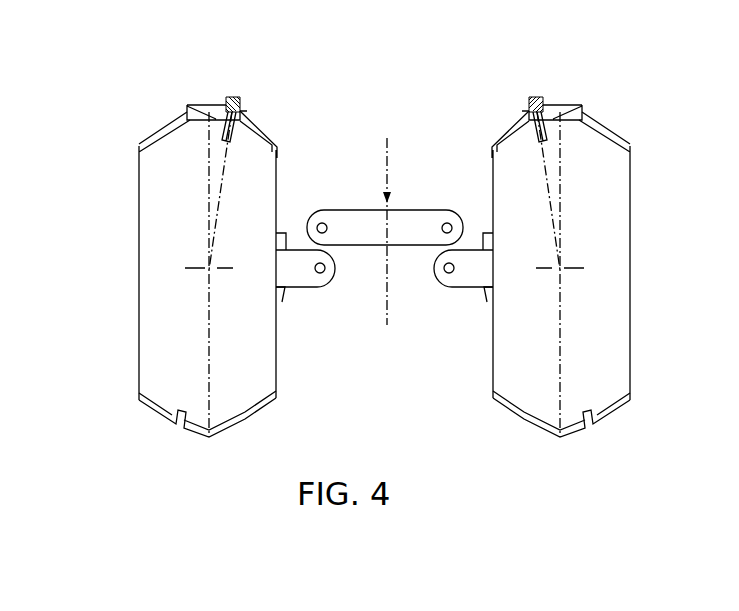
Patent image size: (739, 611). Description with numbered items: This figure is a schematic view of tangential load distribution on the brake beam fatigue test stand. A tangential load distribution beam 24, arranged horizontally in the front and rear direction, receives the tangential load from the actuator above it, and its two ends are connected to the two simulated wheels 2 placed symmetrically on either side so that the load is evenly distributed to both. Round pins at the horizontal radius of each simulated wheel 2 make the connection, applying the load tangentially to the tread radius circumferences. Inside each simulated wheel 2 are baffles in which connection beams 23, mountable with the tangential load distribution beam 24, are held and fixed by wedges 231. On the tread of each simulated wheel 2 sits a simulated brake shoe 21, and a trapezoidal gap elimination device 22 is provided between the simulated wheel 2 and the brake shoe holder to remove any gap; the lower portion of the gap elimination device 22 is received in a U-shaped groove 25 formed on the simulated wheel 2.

The simulated wheel 2 is at (178, 350).
The simulated brake shoe 21 is at (192, 107).
The gap elimination device 22 is at (228, 95).
The connection beam 23 is at (470, 263).
The tangential load distribution beam 24 is at (408, 215).
The U-shaped groove 25 is at (231, 124).
The wedge 231 is at (280, 235).